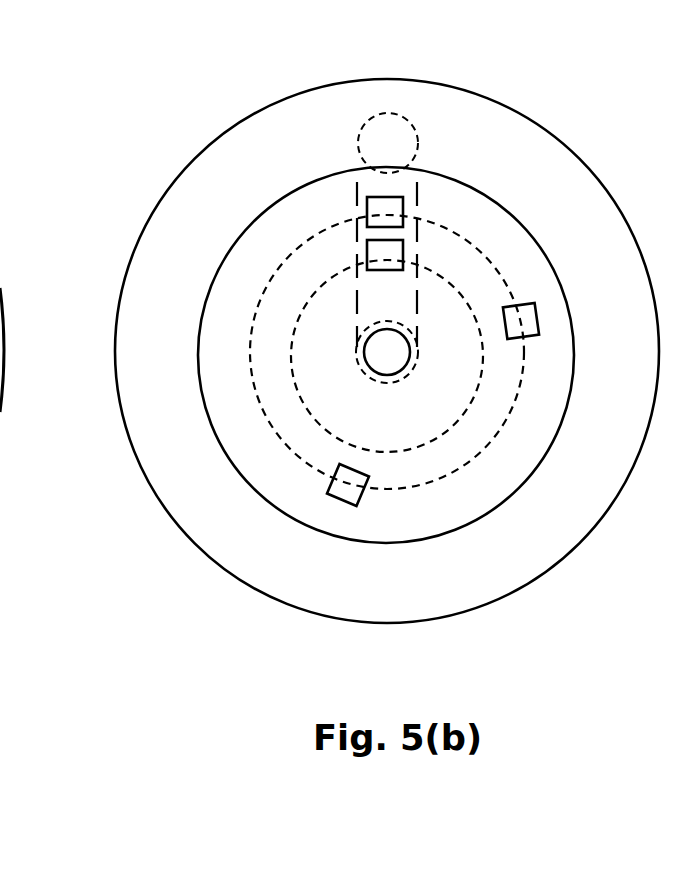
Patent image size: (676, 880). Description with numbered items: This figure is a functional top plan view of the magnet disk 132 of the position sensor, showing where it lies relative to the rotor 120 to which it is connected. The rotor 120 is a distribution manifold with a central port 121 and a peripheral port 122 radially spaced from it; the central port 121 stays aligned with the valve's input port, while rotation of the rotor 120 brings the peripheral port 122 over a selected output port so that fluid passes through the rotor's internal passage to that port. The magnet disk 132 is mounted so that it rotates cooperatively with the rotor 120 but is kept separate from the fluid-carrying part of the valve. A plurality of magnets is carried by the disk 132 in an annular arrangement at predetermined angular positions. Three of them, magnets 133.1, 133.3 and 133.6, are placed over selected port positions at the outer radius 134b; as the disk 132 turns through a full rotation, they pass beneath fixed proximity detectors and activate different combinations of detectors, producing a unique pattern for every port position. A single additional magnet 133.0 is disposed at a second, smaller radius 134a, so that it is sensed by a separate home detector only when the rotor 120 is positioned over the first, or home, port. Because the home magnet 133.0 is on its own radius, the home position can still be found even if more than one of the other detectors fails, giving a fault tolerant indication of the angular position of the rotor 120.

The rotor 120 is at (182, 158).
The central port 121 is at (357, 357).
The peripheral port 122 is at (367, 118).
The magnet disk 132 is at (541, 478).
The magnet 133.0 is at (403, 243).
The magnet 133.1 is at (367, 200).
The magnet 133.3 is at (539, 322).
The magnet 133.6 is at (328, 493).
The second radius 134a is at (357, 448).
The radius 134b is at (415, 488).